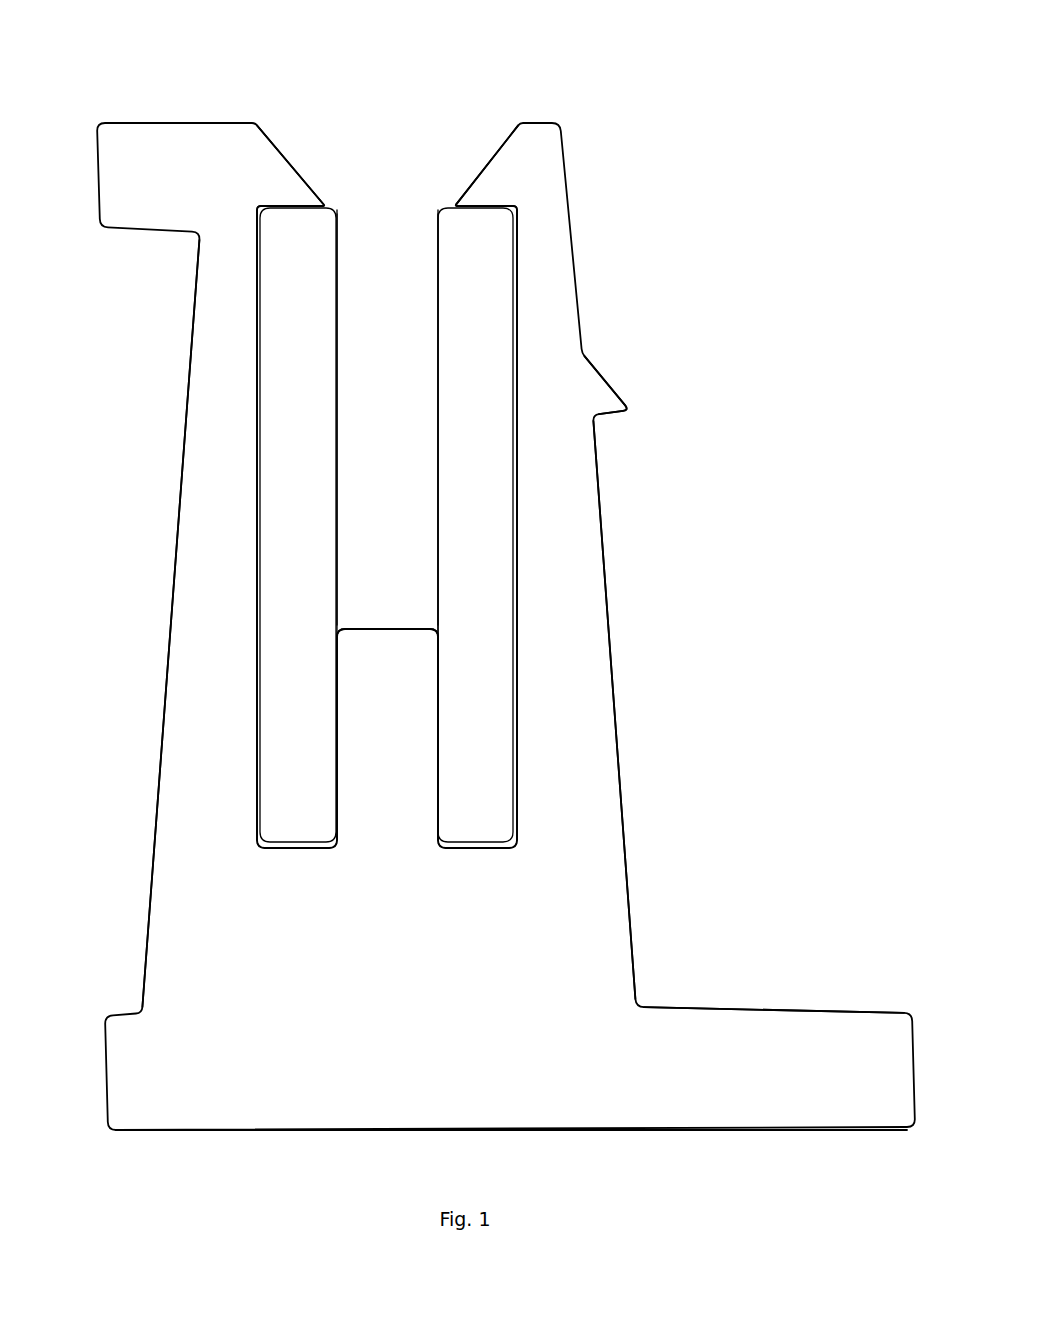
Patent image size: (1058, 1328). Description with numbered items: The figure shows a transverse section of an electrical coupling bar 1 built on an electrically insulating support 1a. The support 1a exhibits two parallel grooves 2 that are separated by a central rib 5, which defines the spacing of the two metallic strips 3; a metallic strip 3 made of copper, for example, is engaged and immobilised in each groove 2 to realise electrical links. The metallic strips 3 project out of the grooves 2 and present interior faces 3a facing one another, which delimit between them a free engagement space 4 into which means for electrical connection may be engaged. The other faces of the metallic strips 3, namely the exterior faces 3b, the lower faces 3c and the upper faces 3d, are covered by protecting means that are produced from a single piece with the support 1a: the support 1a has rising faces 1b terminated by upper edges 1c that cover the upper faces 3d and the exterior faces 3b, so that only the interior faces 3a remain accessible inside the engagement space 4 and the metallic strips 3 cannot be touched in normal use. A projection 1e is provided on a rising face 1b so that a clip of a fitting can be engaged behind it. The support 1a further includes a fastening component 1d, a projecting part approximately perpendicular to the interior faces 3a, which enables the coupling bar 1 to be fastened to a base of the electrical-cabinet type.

The electrical coupling bar 1 is at (658, 127).
The electrically insulating support 1a is at (243, 1133).
The rising faces 1b is at (173, 605).
The upper edges 1c is at (325, 200).
The fastening component 1d is at (783, 1013).
The projection 1e is at (628, 404).
The parallel grooves 2 is at (323, 847).
The metallic strip 3 is at (437, 262).
The interior faces 3a is at (438, 345).
The exterior faces 3b is at (258, 420).
The lower faces 3c is at (290, 847).
The upper faces 3d is at (292, 207).
The free engagement space 4 is at (381, 297).
The central rib 5 is at (389, 629).